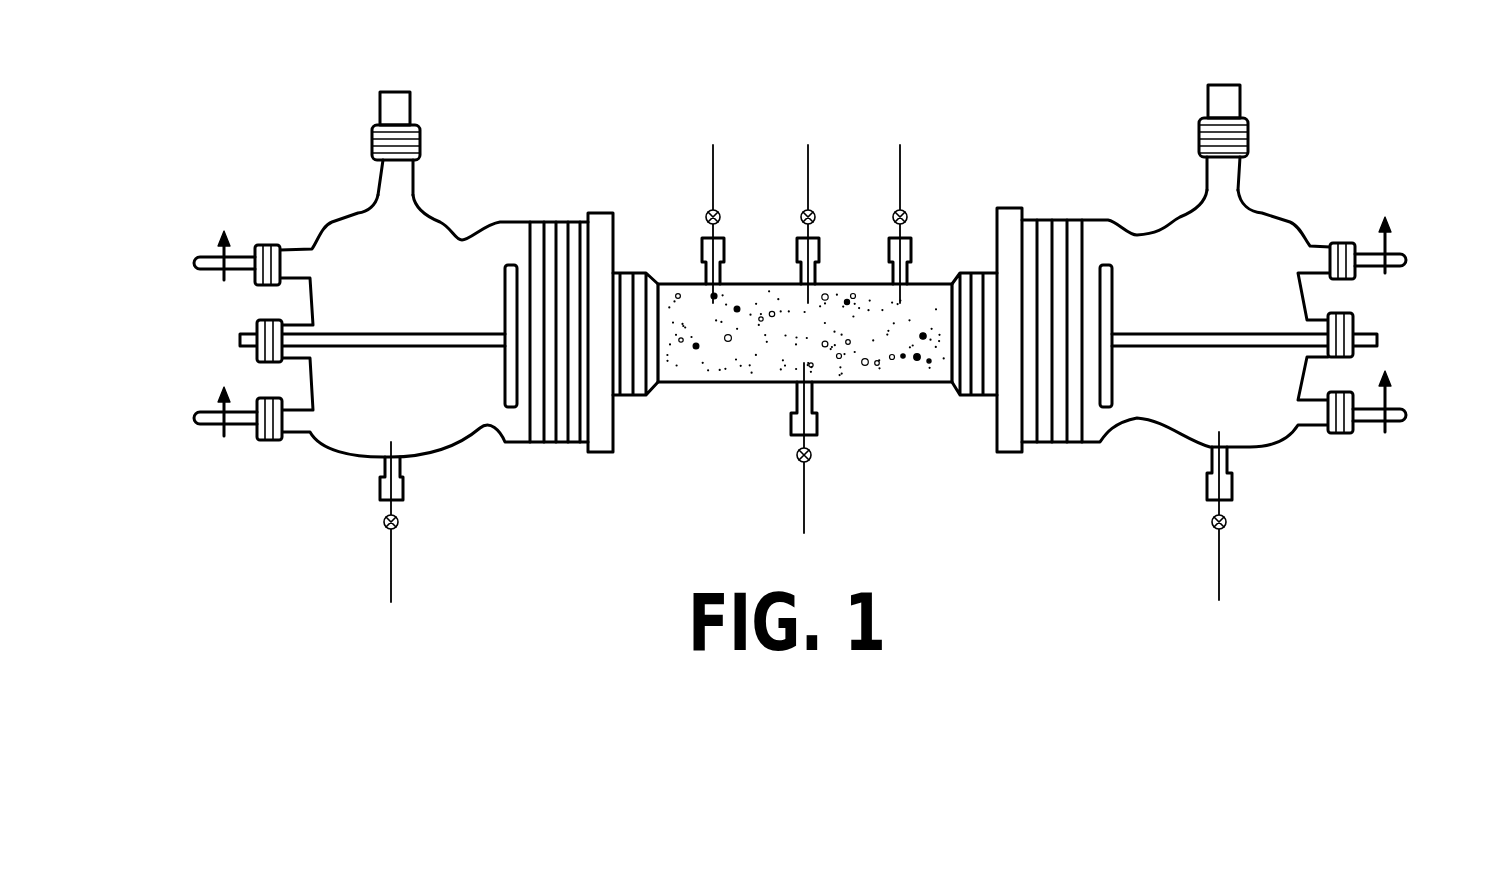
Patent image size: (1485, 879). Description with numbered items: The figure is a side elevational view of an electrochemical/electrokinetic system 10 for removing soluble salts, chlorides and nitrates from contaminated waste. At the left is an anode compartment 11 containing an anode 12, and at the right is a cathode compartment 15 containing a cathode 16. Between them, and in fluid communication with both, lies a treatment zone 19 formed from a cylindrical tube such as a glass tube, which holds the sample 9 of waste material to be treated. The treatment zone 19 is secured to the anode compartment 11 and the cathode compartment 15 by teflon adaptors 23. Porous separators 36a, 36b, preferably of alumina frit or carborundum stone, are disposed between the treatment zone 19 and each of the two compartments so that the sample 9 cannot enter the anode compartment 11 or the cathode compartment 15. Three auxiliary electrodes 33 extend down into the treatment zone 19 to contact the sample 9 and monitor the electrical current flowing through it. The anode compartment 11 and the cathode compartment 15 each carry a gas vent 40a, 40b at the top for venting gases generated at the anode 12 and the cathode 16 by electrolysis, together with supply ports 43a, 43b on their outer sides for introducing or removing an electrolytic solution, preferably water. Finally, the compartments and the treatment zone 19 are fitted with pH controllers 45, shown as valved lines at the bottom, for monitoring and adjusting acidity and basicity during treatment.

The sample 9 is at (787, 352).
The system 10 is at (772, 434).
The anode compartment 11 is at (413, 461).
The anode 12 is at (513, 410).
The cathode compartment 15 is at (1273, 447).
The cathode 16 is at (1107, 408).
The treatment zone 19 is at (867, 383).
The teflon adaptors 23 is at (603, 225).
The auxiliary electrode 33 is at (712, 163).
The porous separator 36a is at (642, 381).
The porous separator 36b is at (980, 360).
The gas vent 40a is at (402, 102).
The gas vent 40b is at (1218, 98).
The supply port 43a is at (200, 260).
The supply port 43b is at (1405, 258).
The pH controller 45 is at (393, 552).